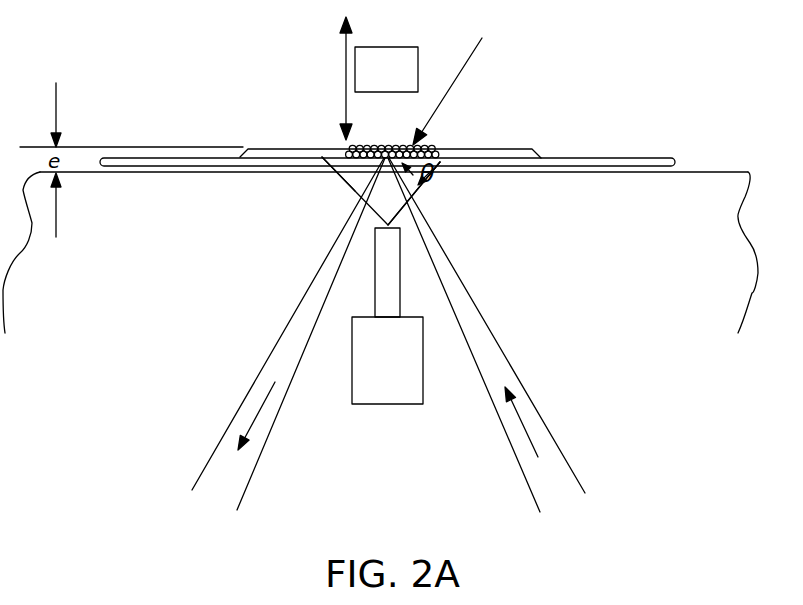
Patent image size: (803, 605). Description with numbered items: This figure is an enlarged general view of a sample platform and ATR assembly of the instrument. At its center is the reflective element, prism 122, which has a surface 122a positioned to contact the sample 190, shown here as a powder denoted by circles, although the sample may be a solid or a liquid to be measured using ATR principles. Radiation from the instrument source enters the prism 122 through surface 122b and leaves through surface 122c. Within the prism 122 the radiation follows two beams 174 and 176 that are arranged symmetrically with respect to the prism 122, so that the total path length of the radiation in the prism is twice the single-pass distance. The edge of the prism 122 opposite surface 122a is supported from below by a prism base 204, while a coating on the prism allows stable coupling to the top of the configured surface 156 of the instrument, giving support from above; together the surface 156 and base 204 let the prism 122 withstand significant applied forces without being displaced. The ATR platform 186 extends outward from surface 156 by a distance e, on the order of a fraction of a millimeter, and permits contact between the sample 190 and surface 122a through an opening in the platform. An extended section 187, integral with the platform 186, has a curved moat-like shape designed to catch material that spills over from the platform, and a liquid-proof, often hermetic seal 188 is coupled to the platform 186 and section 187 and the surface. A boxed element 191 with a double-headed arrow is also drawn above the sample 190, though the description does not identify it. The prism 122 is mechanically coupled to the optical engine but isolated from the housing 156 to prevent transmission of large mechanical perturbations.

The prism 122 is at (360, 196).
The surface 122a is at (440, 167).
The surface 122b is at (433, 170).
The surface 122c is at (350, 186).
The surface 156 is at (115, 322).
The beam 174 is at (510, 440).
The beam 176 is at (268, 438).
The ATR platform 186 is at (441, 148).
The extended section 187 is at (593, 158).
The seal 188 is at (667, 158).
The sample 190 is at (462, 79).
The scan direction 191 is at (403, 80).
The prism base 204 is at (410, 405).